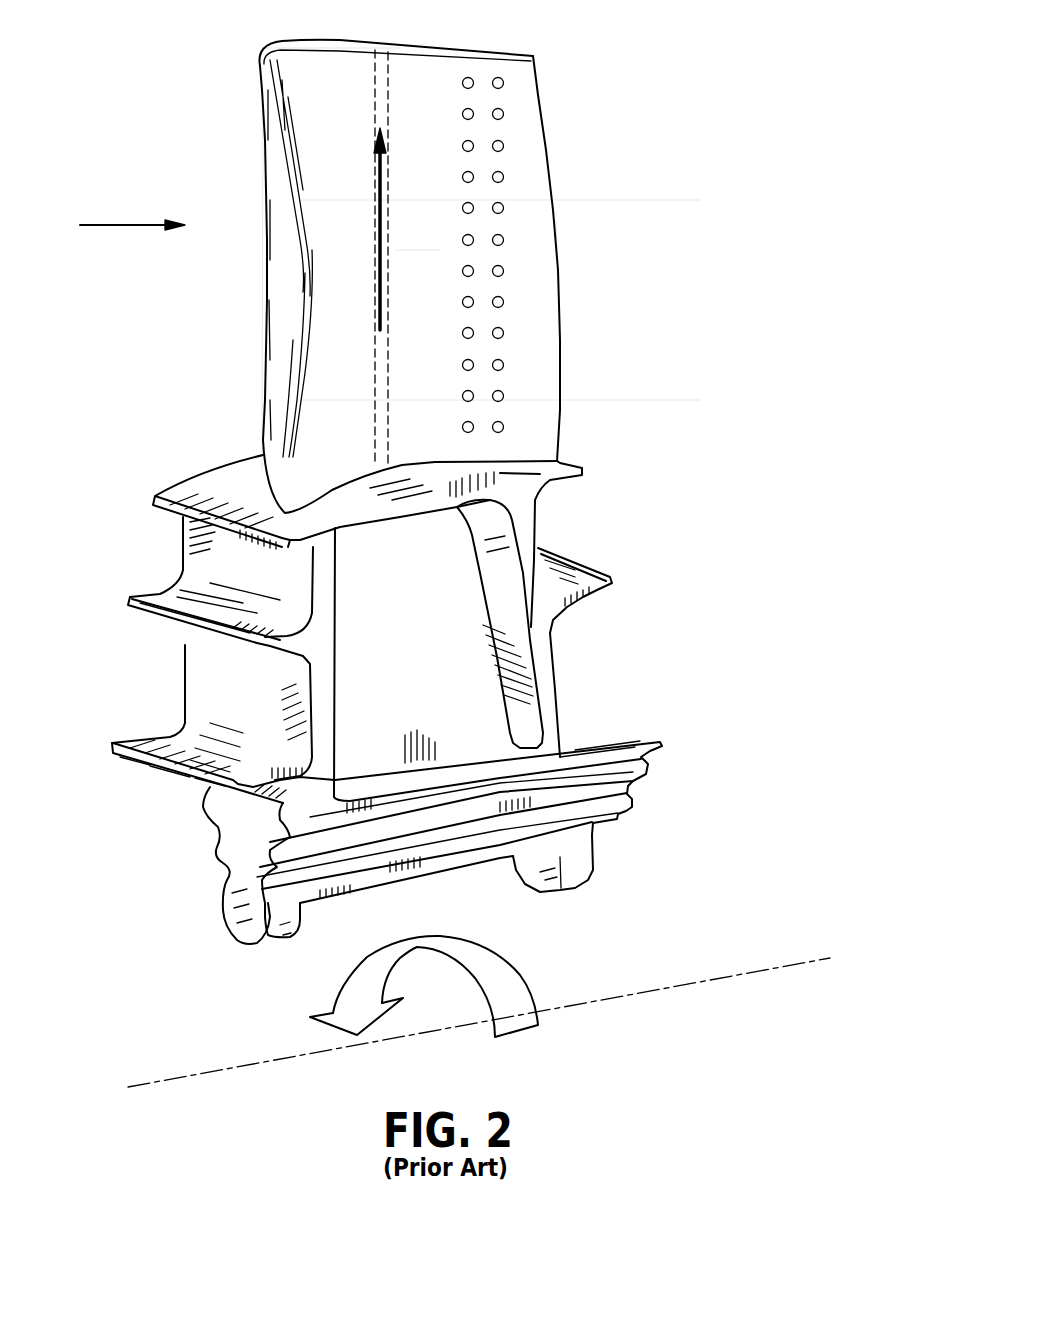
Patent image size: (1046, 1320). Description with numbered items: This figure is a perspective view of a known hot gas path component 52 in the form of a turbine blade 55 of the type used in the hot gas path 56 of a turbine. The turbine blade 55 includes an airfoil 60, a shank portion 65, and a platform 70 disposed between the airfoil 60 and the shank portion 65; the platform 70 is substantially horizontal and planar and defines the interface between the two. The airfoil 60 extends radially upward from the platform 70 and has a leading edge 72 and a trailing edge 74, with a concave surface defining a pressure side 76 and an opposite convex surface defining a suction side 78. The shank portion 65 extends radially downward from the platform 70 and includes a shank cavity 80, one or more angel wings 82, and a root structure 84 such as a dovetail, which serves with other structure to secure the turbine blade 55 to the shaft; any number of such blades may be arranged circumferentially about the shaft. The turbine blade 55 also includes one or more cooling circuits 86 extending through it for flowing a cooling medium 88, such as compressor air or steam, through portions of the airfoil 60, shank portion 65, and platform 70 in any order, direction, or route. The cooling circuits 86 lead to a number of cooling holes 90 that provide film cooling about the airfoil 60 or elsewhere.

The hot gas path component 52 is at (672, 127).
The turbine blade 55 is at (652, 300).
The hot gas path 56 is at (123, 223).
The airfoil 60 is at (552, 112).
The shank portion 65 is at (140, 770).
The platform 70 is at (143, 505).
The leading edge 72 is at (265, 285).
The trailing edge 74 is at (559, 258).
The pressure side 76 is at (443, 325).
The suction side 78 is at (262, 103).
The shank cavity 80 is at (417, 600).
The angel wings 82 is at (613, 572).
The root structure 84 is at (248, 942).
The cooling circuits 86 is at (387, 75).
The cooling medium 88 is at (380, 228).
The cooling holes 90 is at (462, 393).